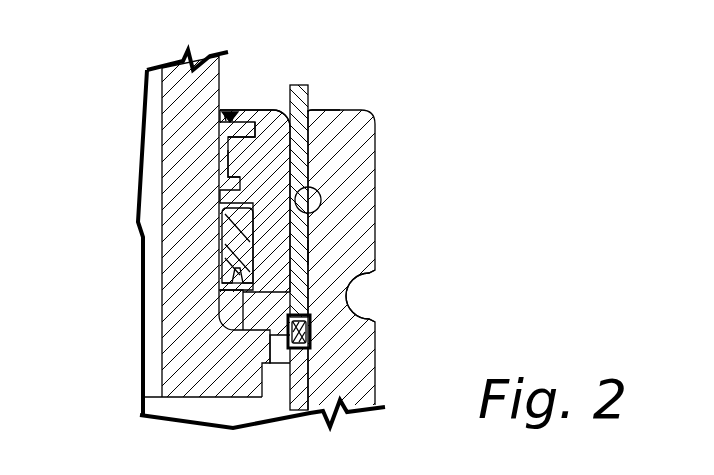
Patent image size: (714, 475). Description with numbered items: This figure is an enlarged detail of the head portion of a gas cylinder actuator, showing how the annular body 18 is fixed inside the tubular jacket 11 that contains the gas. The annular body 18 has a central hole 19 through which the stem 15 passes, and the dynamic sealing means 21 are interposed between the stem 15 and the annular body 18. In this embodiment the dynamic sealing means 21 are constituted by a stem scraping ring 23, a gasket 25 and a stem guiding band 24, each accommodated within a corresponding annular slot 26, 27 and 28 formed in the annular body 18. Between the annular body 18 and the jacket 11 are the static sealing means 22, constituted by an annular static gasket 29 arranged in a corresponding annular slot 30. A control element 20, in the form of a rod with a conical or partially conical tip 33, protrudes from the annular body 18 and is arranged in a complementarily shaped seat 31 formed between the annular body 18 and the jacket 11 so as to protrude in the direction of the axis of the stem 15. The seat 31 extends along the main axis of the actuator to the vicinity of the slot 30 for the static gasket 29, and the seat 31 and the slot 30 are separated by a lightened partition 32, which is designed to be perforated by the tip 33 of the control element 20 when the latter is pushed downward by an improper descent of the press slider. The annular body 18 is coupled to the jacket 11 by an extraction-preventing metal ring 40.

The tubular jacket 11 is at (363, 193).
The stem 15 is at (207, 68).
The annular body 18 is at (249, 105).
The central hole 19 is at (222, 306).
The control element 20 is at (300, 95).
The dynamic sealing means 21 is at (207, 257).
The static sealing means 22 is at (312, 335).
The stem scraping ring 23 is at (222, 124).
The stem guiding band 24 is at (207, 179).
The gasket 25 is at (222, 283).
The annular slot 26 is at (270, 133).
The annular slot 27 is at (312, 138).
The annular slot 28 is at (285, 233).
The annular static gasket 29 is at (310, 352).
The annular slot 30 is at (290, 357).
The seat 31 is at (240, 372).
The lightened partition 32 is at (367, 307).
The tip 33 is at (314, 253).
The extraction-preventing metal ring 40 is at (335, 192).